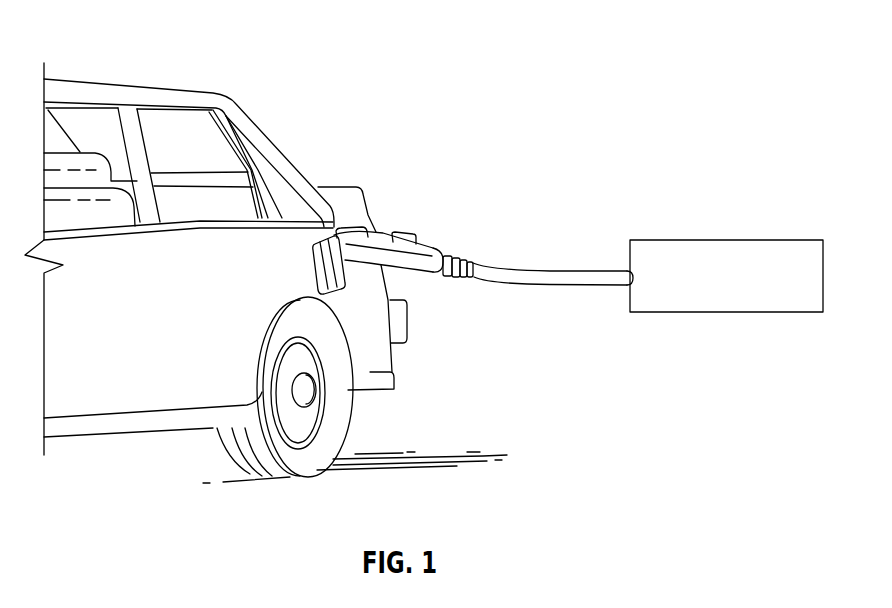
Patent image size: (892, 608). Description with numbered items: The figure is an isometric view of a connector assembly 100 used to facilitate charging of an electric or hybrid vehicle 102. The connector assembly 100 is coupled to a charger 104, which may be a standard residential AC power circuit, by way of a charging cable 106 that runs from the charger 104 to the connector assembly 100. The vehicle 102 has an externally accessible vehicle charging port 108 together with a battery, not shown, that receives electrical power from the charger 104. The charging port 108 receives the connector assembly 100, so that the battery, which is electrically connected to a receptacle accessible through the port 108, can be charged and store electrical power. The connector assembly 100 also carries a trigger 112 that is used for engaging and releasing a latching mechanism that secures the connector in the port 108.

The connector assembly 100 is at (431, 258).
The electric or hybrid vehicle 102 is at (172, 69).
The charger 104 is at (729, 253).
The charging cable 106 is at (546, 277).
The vehicle charging port 108 is at (316, 262).
The trigger 112 is at (403, 231).